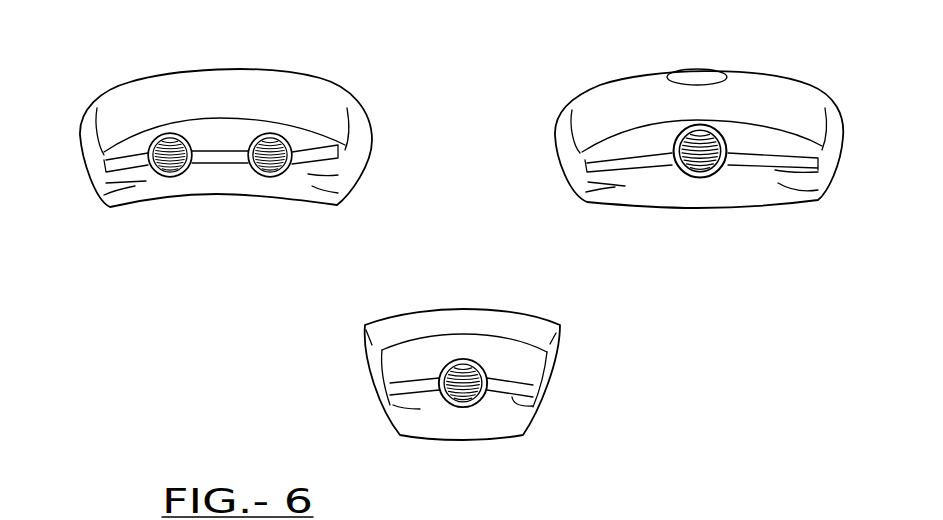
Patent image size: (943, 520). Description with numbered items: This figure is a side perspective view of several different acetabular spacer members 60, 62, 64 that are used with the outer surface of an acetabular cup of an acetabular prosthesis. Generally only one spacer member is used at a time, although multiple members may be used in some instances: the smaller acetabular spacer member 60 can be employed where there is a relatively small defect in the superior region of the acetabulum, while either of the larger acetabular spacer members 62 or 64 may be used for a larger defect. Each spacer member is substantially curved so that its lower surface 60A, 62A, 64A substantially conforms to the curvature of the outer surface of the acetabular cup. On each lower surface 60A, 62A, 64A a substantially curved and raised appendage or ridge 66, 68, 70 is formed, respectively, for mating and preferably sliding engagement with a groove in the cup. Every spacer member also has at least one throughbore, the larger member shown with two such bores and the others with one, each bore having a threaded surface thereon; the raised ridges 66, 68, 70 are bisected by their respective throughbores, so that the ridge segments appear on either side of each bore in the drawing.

The acetabular spacer member 60 is at (503, 361).
The lower surface 60A is at (402, 365).
The acetabular spacer member 62 is at (681, 161).
The lower surface 62A is at (588, 202).
The acetabular spacer member 64 is at (209, 160).
The lower surface 64A is at (110, 207).
The raised ridge 66 is at (513, 397).
The raised ridge 68 is at (777, 170).
The raised ridge 70 is at (308, 173).